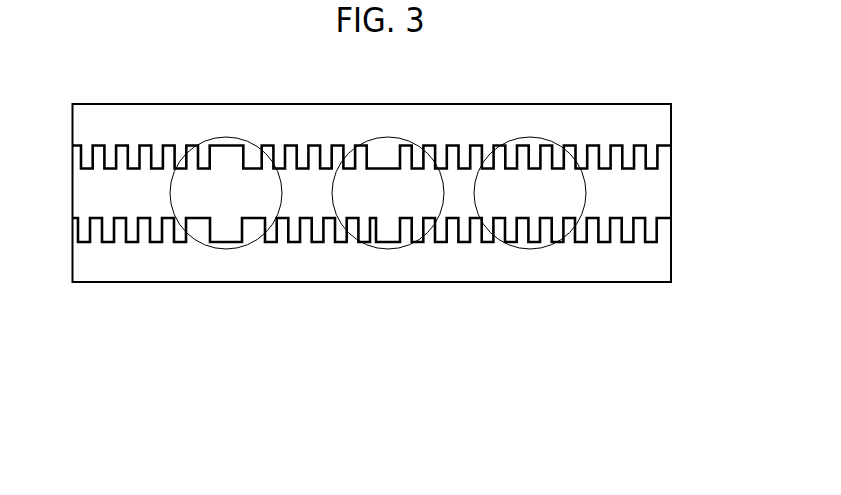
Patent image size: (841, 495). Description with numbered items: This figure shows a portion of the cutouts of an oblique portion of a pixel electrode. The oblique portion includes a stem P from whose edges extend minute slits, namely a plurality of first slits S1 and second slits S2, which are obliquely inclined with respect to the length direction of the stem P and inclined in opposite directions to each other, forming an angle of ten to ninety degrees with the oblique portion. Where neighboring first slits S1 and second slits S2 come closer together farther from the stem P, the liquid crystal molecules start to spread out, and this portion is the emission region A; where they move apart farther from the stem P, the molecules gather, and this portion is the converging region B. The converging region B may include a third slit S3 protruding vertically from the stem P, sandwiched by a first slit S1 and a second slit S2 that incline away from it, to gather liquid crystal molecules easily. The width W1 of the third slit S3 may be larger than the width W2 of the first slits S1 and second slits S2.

The stem P is at (648, 193).
The emission region A is at (388, 180).
The converging region B is at (378, 180).
The width of the third slit W1 is at (211, 156).
The width of the first slit and the second slit W2 is at (261, 170).
The first slit S1 is at (355, 237).
The second slit S2 is at (388, 230).
The third slit S3 is at (227, 243).